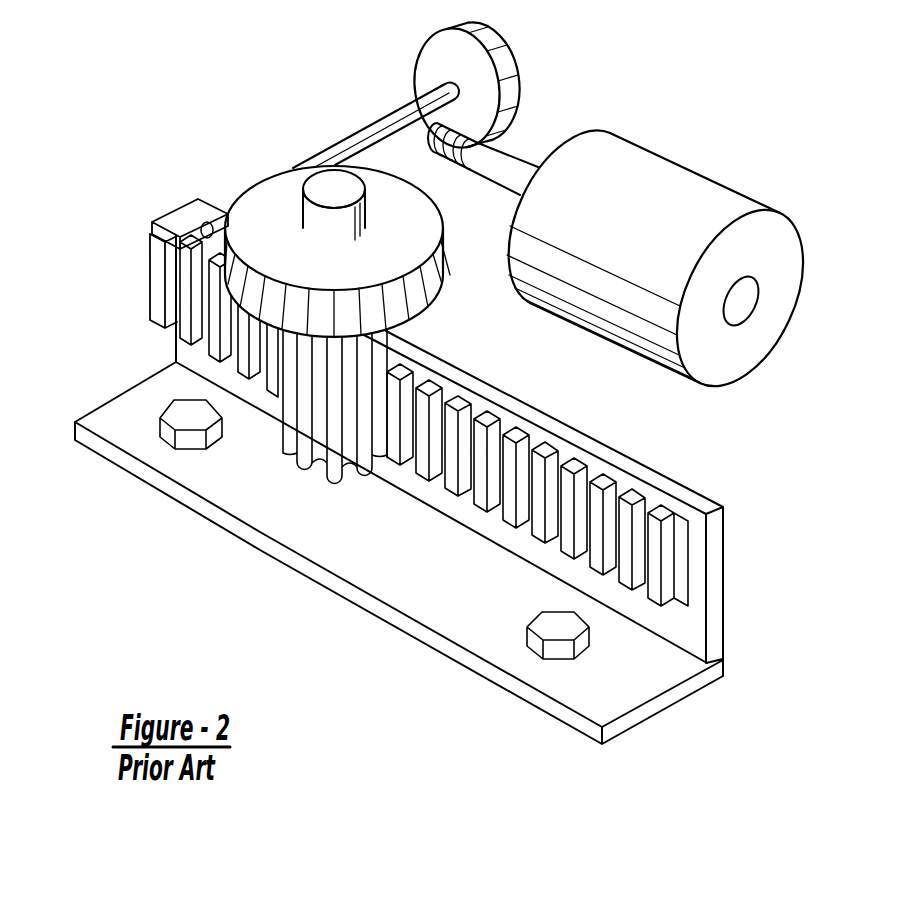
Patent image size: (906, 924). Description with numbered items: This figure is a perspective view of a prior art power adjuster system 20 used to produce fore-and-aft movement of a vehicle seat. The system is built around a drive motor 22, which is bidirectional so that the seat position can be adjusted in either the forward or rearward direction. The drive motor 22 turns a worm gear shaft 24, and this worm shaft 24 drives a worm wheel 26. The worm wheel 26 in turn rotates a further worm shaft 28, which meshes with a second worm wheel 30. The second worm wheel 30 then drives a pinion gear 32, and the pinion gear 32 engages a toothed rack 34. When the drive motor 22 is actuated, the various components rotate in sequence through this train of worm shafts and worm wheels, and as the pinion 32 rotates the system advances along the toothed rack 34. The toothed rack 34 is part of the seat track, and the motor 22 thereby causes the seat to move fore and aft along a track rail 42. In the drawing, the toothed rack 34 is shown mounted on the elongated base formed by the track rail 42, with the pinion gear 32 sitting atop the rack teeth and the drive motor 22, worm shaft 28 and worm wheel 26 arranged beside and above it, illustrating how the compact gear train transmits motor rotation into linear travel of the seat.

The power adjuster system 20 is at (148, 182).
The drive motor 22 is at (620, 327).
The worm gear shaft 24 is at (212, 316).
The worm wheel 26 is at (498, 75).
The worm shaft 28 is at (362, 138).
The second worm wheel 30 is at (267, 212).
The pinion gear 32 is at (335, 373).
The toothed rack 34 is at (655, 568).
The track rail 42 is at (505, 677).